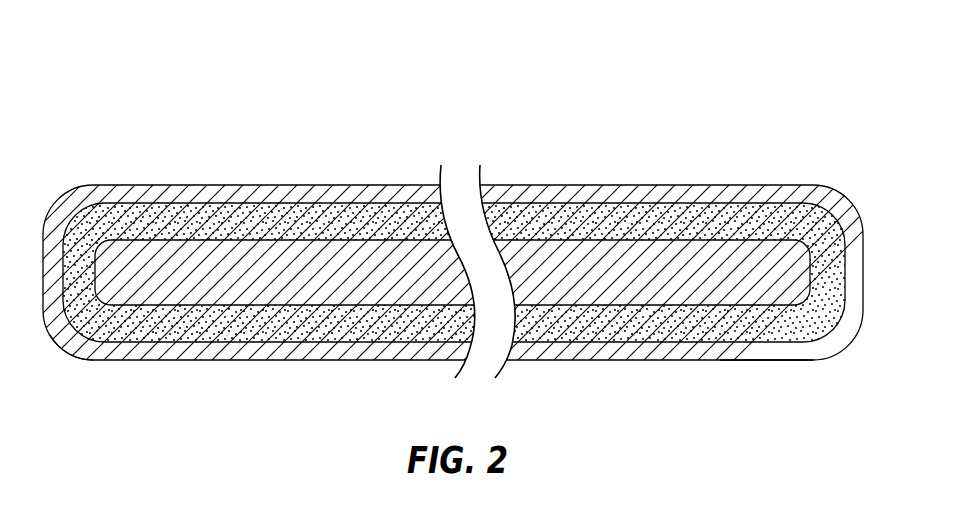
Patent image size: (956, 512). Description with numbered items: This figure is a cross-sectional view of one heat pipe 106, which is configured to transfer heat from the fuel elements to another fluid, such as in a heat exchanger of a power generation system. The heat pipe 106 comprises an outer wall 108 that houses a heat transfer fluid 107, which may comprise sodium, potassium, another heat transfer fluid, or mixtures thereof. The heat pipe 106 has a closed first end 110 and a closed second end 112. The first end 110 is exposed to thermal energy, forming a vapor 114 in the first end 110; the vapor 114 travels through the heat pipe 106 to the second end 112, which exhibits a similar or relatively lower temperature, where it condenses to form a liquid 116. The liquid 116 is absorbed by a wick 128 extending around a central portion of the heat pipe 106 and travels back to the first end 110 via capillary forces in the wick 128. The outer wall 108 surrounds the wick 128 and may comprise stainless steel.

The heat pipe 106 is at (203, 107).
The heat transfer fluid 107 is at (612, 261).
The outer wall 108 is at (792, 196).
The first end 110 is at (151, 367).
The second end 112 is at (747, 362).
The vapor 114 is at (182, 288).
The liquid 116 is at (758, 288).
The wick 128 is at (658, 222).